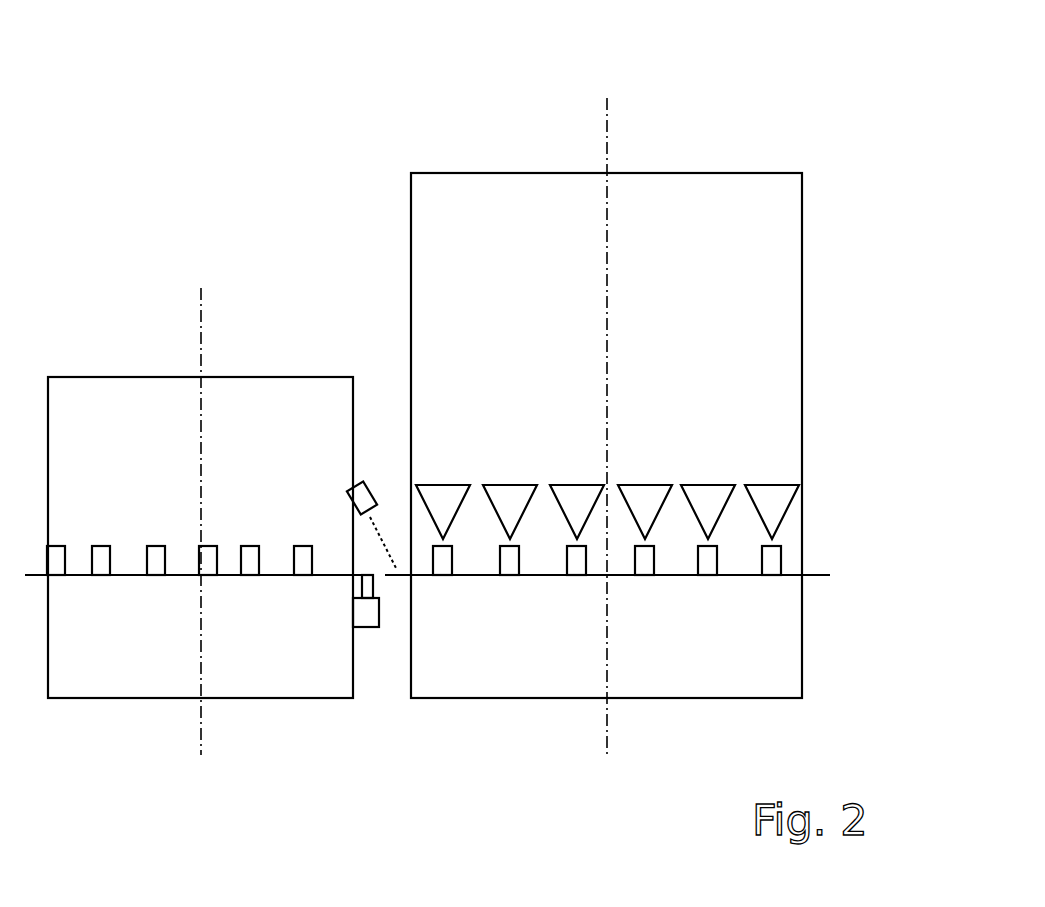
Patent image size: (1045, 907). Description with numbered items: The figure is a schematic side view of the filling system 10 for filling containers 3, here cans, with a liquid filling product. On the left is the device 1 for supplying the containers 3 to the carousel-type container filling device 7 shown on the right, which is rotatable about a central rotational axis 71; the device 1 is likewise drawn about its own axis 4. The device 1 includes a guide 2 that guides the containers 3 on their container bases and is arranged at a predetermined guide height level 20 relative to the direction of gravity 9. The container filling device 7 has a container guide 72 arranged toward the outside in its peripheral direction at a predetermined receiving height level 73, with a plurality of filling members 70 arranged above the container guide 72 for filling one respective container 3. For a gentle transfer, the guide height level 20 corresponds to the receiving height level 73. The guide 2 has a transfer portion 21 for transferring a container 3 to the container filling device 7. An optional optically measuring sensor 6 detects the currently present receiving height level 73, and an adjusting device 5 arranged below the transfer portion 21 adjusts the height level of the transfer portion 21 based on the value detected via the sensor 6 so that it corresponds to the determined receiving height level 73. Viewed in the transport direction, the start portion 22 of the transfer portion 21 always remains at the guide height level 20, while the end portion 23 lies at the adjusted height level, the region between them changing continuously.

The device 1 is at (66, 290).
The guide 2 is at (33, 578).
The containers 3 is at (101, 555).
The axis of printing unit 4 is at (202, 345).
The adjusting device 5 is at (367, 612).
The sensor 6 is at (364, 498).
The container filling device 7 is at (797, 112).
The direction of gravity 9 is at (332, 107).
The filling system 10 is at (222, 164).
The guide height level 20 is at (84, 584).
The transfer portion 21 is at (327, 595).
The start portion 22 is at (293, 578).
The end portion 23 is at (377, 577).
The filling members 70 is at (444, 492).
The central rotational axis 71 is at (607, 130).
The container guide 72 is at (672, 577).
The receiving height level 73 is at (840, 572).